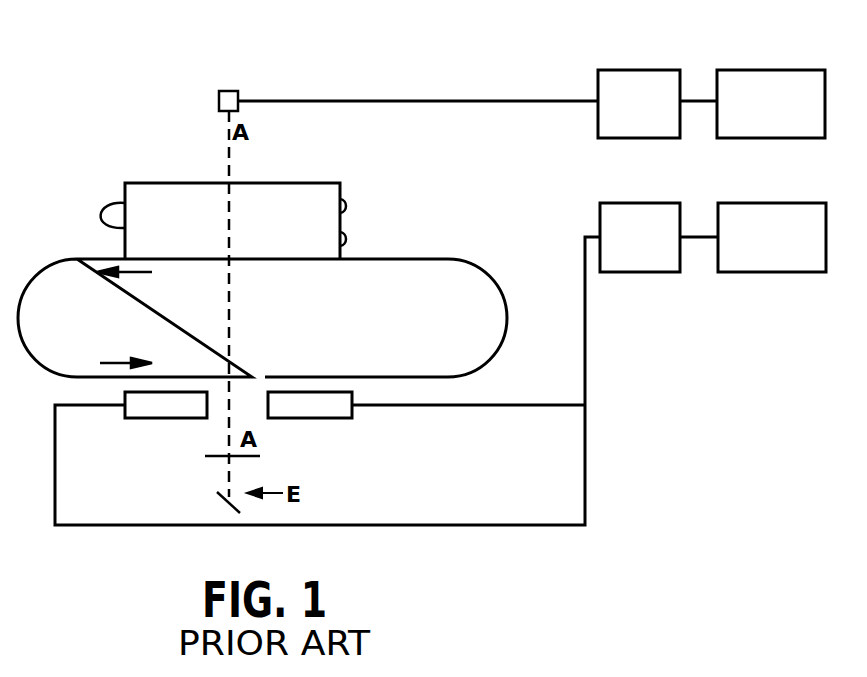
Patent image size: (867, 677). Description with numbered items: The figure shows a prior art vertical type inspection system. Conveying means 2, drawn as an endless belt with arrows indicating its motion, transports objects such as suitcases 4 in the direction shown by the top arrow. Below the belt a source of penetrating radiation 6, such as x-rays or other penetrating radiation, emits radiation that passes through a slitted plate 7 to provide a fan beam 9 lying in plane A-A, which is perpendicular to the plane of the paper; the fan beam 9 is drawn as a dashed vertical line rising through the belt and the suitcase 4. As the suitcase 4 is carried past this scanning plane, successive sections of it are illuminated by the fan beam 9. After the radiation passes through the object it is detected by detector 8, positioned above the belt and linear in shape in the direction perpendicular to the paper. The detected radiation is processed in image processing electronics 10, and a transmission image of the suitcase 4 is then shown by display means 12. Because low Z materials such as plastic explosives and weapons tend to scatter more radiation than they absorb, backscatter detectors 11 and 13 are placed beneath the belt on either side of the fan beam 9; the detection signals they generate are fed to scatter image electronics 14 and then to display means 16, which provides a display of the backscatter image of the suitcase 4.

The conveying means 2 is at (500, 346).
The suitcase 4 is at (318, 183).
The source of penetrating radiation 6 is at (296, 458).
The slitted plate 7 is at (212, 455).
The detector 8 is at (240, 92).
The fan beam 9 is at (231, 336).
The image processing electronics 10 is at (648, 70).
The backscatter detector 11 is at (130, 418).
The display means 12 is at (791, 70).
The backscatter detector 13 is at (346, 418).
The scatter image electronics 14 is at (653, 272).
The display means 16 is at (783, 272).